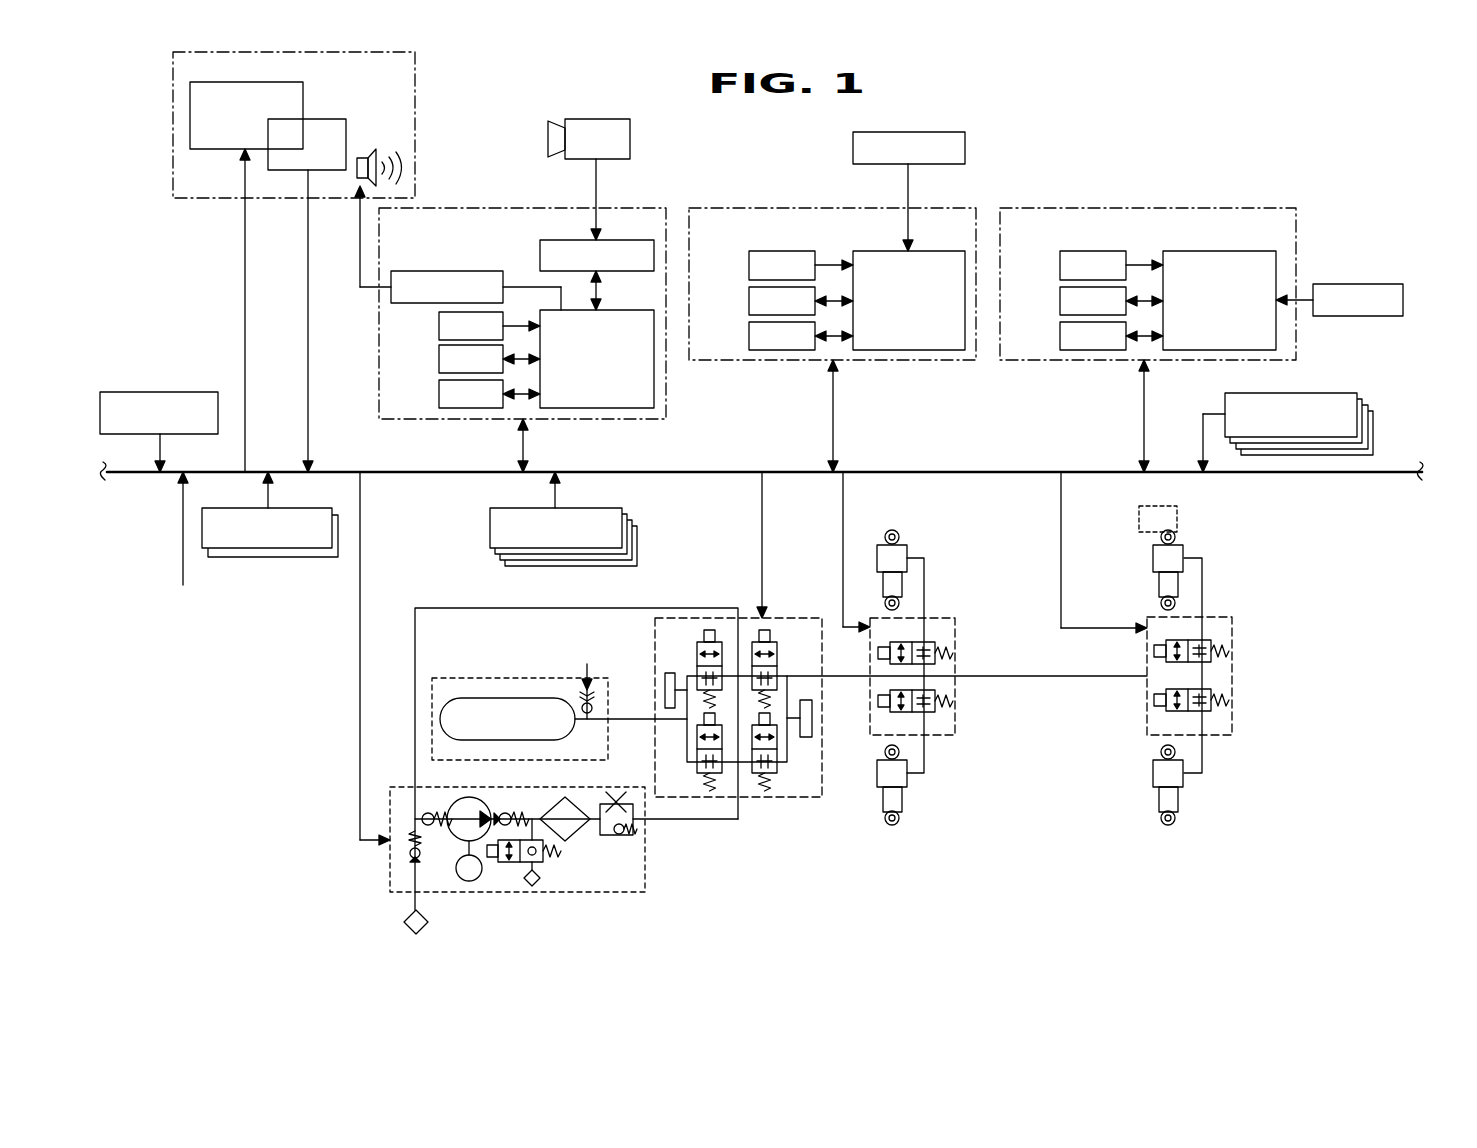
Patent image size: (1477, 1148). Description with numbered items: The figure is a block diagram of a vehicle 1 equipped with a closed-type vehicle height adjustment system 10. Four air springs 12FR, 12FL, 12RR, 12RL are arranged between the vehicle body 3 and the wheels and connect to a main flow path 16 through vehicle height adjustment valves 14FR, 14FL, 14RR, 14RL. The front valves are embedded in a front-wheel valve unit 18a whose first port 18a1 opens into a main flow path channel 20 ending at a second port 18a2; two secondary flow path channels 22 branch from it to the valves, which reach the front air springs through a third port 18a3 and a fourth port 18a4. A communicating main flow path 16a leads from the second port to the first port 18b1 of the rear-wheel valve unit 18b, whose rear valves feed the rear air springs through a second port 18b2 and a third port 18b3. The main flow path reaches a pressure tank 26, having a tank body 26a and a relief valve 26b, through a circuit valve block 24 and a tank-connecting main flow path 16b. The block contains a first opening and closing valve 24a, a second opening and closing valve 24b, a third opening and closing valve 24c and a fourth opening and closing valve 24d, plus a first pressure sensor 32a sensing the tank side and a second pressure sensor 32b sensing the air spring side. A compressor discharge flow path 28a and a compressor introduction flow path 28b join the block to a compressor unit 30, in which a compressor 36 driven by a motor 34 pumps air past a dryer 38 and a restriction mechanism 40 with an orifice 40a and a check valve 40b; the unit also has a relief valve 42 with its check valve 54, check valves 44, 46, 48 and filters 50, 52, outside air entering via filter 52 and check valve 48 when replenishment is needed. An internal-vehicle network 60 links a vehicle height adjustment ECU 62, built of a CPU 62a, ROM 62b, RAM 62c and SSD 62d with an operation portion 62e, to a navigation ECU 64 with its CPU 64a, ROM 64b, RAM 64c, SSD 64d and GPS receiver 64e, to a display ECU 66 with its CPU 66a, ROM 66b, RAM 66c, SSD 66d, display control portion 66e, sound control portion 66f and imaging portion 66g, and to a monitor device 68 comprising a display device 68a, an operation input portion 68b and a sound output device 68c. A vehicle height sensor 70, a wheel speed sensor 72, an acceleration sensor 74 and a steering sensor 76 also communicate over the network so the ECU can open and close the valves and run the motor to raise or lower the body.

The vehicle 1 is at (1300, 140).
The vehicle body 3 is at (1139, 518).
The vehicle height adjustment system 10 is at (903, 880).
The air spring 12FR is at (900, 538).
The air spring 12FL is at (908, 796).
The air spring 12RR is at (1178, 538).
The air spring 12RL is at (1185, 796).
The vehicle height adjustment valve 14FR is at (936, 645).
The vehicle height adjustment valve 14FL is at (942, 718).
The vehicle height adjustment valve 14RR is at (1210, 645).
The vehicle height adjustment valve 14RL is at (1226, 716).
The main flow path 16 is at (840, 690).
The communicating main flow path 16a is at (1076, 680).
The tank-connecting main flow path 16b is at (618, 718).
The front-wheel valve unit 18a is at (966, 748).
The first port 18a1 is at (866, 676).
The second port 18a2 is at (926, 678).
The third port 18a3 is at (926, 640).
The fourth port 18a4 is at (926, 736).
The rear-wheel valve unit 18b is at (1240, 738).
The first port 18b1 is at (1144, 676).
The second port 18b2 is at (1205, 640).
The third port 18b3 is at (1205, 736).
The main flow path channel 20 is at (880, 678).
The secondary flow path channel 22 is at (945, 660).
The circuit valve block 24 is at (762, 810).
The first opening and closing valve 24a is at (712, 630).
The second opening and closing valve 24b is at (718, 780).
The third opening and closing valve 24c is at (770, 780).
The fourth opening and closing valve 24d is at (766, 630).
The pressure tank 26 is at (474, 672).
The tank body 26a is at (500, 698).
The relief valve 26b is at (580, 688).
The compressor discharge flow path 28a is at (688, 820).
The compressor introduction flow path 28b is at (450, 608).
The compressor unit 30 is at (584, 902).
The first pressure sensor 32a is at (668, 672).
The second pressure sensor 32b is at (806, 740).
The motor 34 is at (466, 882).
The compressor 36 is at (451, 840).
The dryer 38 is at (580, 833).
The restriction mechanism 40 is at (617, 837).
The orifice 40a is at (617, 797).
The check valve 40b is at (632, 834).
The relief valve 42 is at (511, 863).
The check valve 44 is at (512, 812).
The check valve 46 is at (424, 812).
The check valve 48 is at (408, 852).
The filter 50 is at (540, 863).
The filter 52 is at (403, 923).
The check valve 54 is at (540, 880).
The internal-vehicle network 60 is at (1400, 480).
The vehicle height adjustment ECU 62 is at (1134, 208).
The CPU 62a is at (1240, 251).
The ROM 62b is at (1060, 264).
The RAM 62c is at (1060, 299).
The SSD 62d is at (1060, 334).
The operation portion 62e is at (1360, 284).
The navigation ECU 64 is at (826, 208).
The CPU 64a is at (925, 251).
The ROM 64b is at (749, 264).
The RAM 64c is at (749, 299).
The SSD 64d is at (749, 334).
The GPS receiver 64e is at (922, 132).
The display ECU 66 is at (503, 208).
The CPU 66a is at (610, 310).
The ROM 66b is at (439, 324).
The RAM 66c is at (439, 358).
The SSD 66d is at (439, 392).
The display control portion 66e is at (612, 240).
The sound control portion 66f is at (460, 271).
The imaging portion 66g is at (600, 116).
The monitor device 68 is at (418, 64).
The display device 68a is at (203, 82).
The operation input portion 68b is at (313, 119).
The sound output device 68c is at (369, 152).
The vehicle height sensor 70 is at (578, 508).
The wheel speed sensor 72 is at (1262, 394).
The acceleration sensor 74 is at (256, 560).
The steering sensor 76 is at (166, 392).